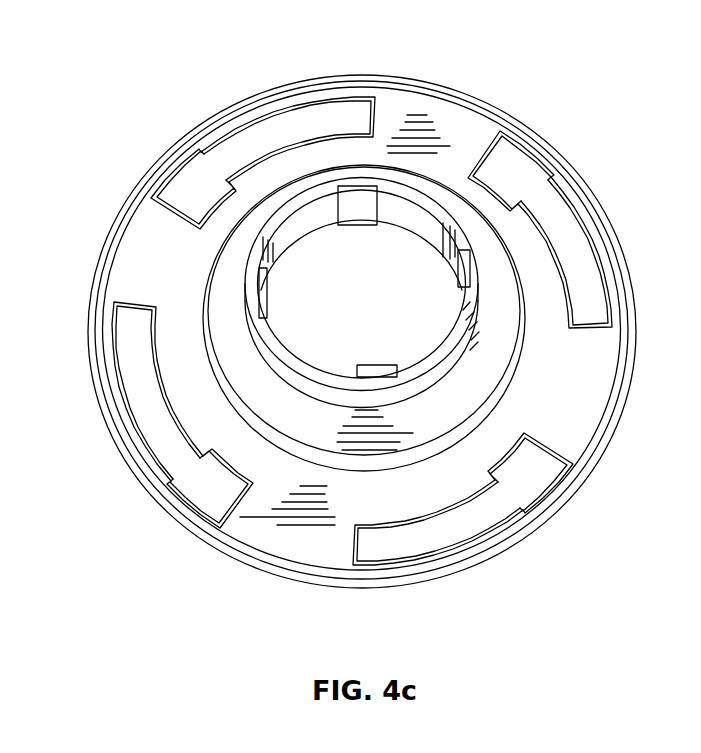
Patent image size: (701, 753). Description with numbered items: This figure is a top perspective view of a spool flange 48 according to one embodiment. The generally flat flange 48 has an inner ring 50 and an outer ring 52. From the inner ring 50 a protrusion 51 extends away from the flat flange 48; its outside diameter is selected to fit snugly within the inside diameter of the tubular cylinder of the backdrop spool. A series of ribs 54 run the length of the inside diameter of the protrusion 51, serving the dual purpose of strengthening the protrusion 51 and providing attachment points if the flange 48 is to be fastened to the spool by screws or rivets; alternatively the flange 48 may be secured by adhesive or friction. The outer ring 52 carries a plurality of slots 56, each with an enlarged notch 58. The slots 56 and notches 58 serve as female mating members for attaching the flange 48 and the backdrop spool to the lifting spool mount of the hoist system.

The flange 48 is at (560, 62).
The inner ring 50 is at (478, 335).
The protrusion 51 is at (470, 268).
The outer ring 52 is at (588, 402).
The ribs 54 is at (373, 370).
The slots 56 is at (353, 122).
The enlarged notch 58 is at (183, 187).